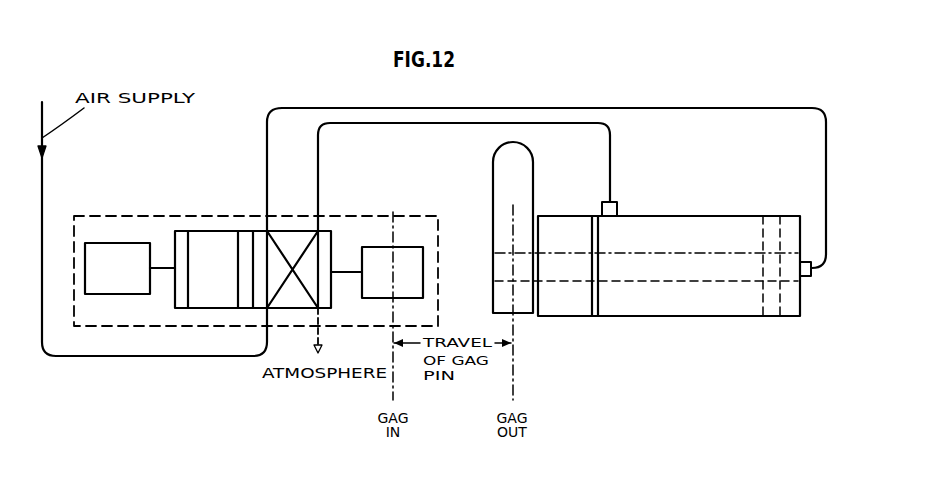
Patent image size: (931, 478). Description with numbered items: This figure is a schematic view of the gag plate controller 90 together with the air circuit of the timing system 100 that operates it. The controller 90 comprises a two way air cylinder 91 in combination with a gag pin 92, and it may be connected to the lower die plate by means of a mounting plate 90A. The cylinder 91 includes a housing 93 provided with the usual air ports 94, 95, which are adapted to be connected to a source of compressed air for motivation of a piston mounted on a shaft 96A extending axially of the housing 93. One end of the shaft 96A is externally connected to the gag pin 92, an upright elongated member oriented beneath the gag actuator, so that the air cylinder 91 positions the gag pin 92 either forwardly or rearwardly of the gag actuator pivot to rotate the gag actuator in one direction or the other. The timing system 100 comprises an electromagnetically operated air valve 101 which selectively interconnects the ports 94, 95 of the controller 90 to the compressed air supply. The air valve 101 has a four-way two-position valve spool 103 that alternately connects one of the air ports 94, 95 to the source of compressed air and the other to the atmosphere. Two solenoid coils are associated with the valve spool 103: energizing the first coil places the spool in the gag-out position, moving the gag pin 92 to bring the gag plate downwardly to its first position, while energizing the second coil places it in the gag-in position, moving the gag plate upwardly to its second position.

The controller 90 is at (659, 264).
The mounting plate 90A is at (568, 297).
The two way air cylinder 91 is at (655, 311).
The gag pin 92 is at (502, 165).
The housing 93 is at (683, 216).
The air port 94 is at (812, 278).
The air port 95 is at (617, 203).
The shaft 96A is at (672, 286).
The timing system 100 is at (248, 226).
The electromagnetically operated air valve 101 is at (138, 215).
The four-way two-position valve spool 103 is at (208, 240).